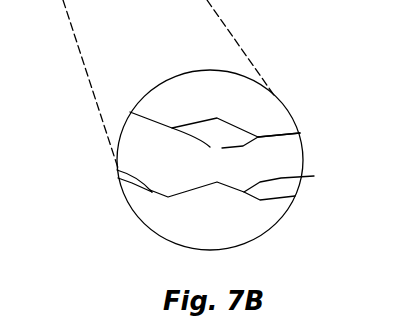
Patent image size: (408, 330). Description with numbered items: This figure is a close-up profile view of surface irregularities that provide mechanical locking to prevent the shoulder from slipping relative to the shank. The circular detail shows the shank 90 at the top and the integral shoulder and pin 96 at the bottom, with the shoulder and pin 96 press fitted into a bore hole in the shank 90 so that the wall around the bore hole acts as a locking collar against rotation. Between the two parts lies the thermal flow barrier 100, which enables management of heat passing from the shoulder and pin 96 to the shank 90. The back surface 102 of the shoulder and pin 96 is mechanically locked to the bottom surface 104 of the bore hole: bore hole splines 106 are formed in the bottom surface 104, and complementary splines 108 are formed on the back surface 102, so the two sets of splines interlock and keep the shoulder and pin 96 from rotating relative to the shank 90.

The shank 90 is at (242, 98).
The shoulder and pin 96 is at (267, 213).
The thermal flow barrier 100 is at (290, 158).
The back surface 102 is at (117, 170).
The bottom surface 104 is at (137, 117).
The bore hole splines 106 is at (222, 148).
The complementary splines 108 is at (298, 177).